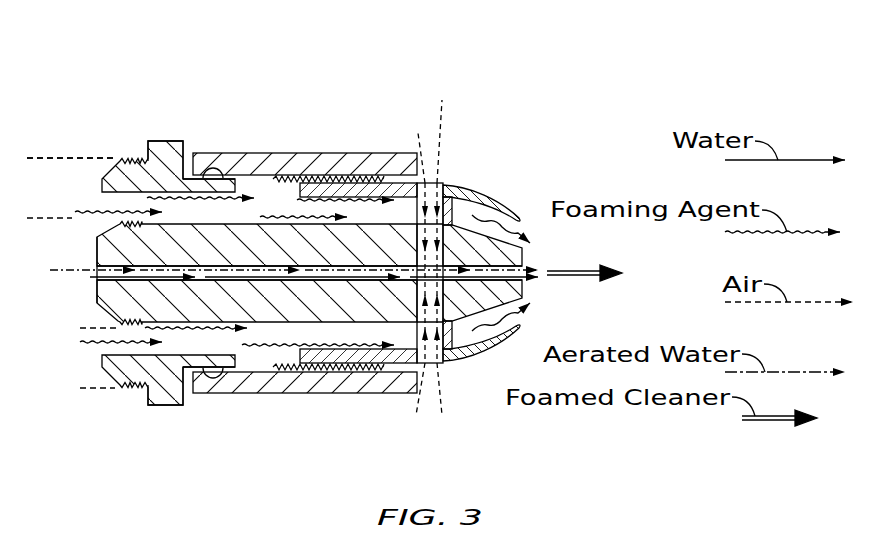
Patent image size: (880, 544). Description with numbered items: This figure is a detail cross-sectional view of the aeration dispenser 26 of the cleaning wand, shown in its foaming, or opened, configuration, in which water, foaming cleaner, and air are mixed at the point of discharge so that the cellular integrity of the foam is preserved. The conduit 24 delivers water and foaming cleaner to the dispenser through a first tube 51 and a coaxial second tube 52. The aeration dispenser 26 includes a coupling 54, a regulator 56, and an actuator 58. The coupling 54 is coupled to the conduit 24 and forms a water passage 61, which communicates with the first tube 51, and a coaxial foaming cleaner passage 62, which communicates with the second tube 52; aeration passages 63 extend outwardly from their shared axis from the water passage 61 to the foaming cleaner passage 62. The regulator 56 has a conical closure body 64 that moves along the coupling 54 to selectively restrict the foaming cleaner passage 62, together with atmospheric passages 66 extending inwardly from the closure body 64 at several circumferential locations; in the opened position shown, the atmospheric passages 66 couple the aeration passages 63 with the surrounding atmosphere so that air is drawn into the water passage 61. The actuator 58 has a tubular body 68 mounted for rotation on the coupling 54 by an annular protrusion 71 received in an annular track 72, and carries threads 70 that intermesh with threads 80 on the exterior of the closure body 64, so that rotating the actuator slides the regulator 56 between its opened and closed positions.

The conduit 24 is at (82, 150).
The aeration dispenser 26 is at (322, 241).
The first tube 51 is at (72, 218).
The second tube 52 is at (72, 153).
The coupling 54 is at (165, 138).
The regulator 56 is at (468, 181).
The actuator 58 is at (263, 135).
The water passage 61 is at (100, 268).
The foaming cleaner passage 62 is at (113, 198).
The aeration passages 63 is at (444, 235).
The closure body 64 is at (497, 188).
The atmospheric passages 66 is at (442, 200).
The tubular body 68 is at (287, 151).
The threads 70 is at (292, 195).
The annular protrusion 71 is at (217, 170).
The annular track 72 is at (207, 186).
The threads 80 is at (367, 173).